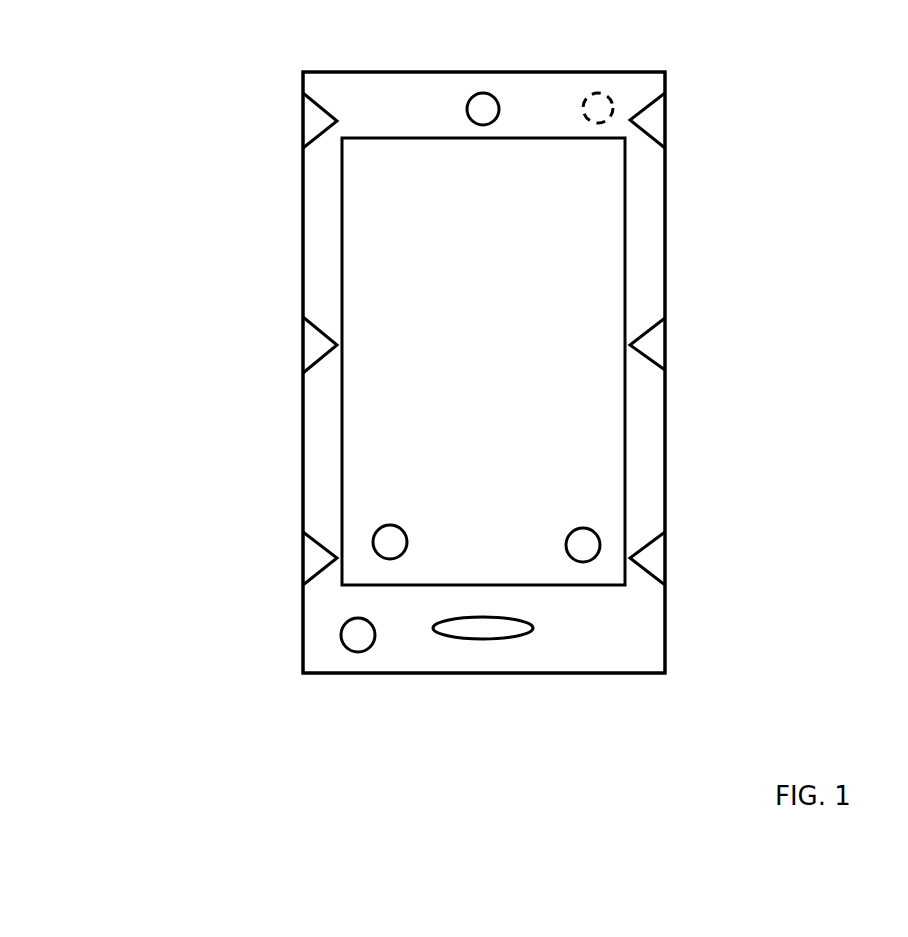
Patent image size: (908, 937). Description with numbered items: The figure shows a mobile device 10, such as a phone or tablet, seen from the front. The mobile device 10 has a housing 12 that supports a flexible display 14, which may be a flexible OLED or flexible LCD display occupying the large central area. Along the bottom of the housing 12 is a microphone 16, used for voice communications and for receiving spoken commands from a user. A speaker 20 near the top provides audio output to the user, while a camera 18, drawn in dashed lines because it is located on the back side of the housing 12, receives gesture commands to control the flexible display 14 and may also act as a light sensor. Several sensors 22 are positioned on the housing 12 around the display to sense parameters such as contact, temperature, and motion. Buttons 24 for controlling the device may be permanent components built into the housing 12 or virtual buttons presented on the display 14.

The mobile device 10 is at (183, 91).
The housing 12 is at (303, 240).
The flexible display 14 is at (508, 306).
The microphone 16 is at (468, 640).
The camera 18 is at (612, 100).
The speaker 20 is at (486, 93).
The sensors 22 is at (303, 138).
The buttons 24 is at (374, 535).